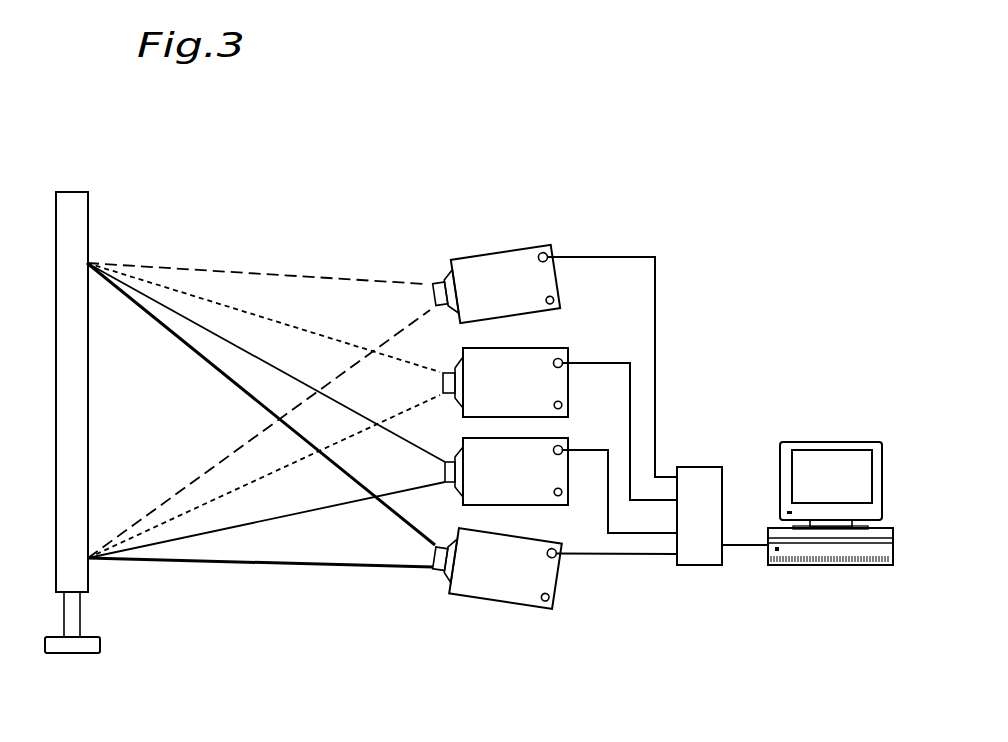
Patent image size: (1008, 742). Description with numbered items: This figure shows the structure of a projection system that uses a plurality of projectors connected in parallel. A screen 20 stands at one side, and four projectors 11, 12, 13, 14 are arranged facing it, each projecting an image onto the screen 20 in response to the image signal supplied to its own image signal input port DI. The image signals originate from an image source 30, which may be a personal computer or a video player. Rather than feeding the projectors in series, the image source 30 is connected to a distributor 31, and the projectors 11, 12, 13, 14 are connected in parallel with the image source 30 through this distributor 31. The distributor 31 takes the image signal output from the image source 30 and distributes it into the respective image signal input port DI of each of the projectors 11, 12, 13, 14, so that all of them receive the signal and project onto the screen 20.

The screen 20 is at (75, 192).
The projector 11 is at (510, 246).
The projector 12 is at (535, 348).
The projector 13 is at (532, 505).
The projector 14 is at (527, 612).
The distributor 31 is at (703, 467).
The image source 30 is at (818, 565).